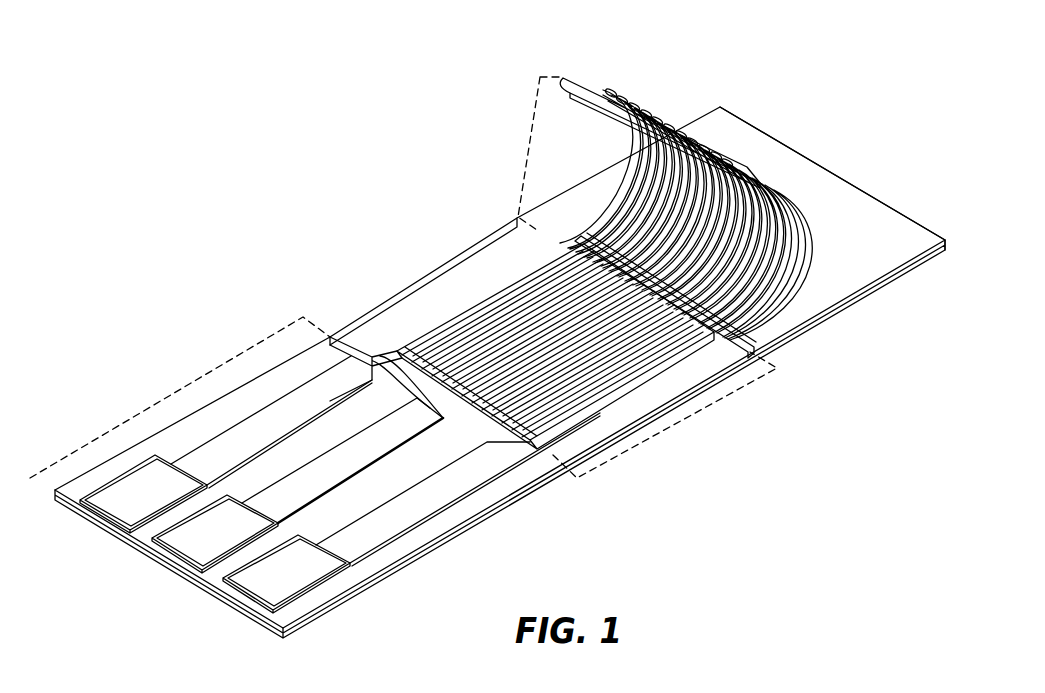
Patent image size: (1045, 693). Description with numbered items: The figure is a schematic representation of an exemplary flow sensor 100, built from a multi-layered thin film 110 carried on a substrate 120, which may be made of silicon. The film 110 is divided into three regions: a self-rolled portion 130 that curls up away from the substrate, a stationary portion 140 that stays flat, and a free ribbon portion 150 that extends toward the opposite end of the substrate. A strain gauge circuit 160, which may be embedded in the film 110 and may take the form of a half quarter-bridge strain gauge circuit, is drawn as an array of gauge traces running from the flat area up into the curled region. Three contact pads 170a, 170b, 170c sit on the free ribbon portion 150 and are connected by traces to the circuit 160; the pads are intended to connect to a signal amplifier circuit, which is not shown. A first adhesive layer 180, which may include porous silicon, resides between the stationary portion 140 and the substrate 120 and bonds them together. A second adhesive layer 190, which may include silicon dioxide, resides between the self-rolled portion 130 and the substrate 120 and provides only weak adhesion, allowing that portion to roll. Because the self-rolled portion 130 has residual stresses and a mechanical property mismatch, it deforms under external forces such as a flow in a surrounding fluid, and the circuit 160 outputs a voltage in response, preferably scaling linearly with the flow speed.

The flow sensor 100 is at (494, 24).
The multi-layered thin film 110 is at (594, 86).
The substrate 120 is at (878, 300).
The self-rolled portion 130 is at (520, 148).
The stationary portion 140 is at (702, 426).
The free ribbon portion 150 is at (162, 396).
The strain gauge circuit 160 is at (500, 333).
The contact pad 170a is at (118, 512).
The contact pad 170b is at (190, 542).
The contact pad 170c is at (295, 580).
The first adhesive layer 180 is at (730, 347).
The second adhesive layer 190 is at (826, 211).